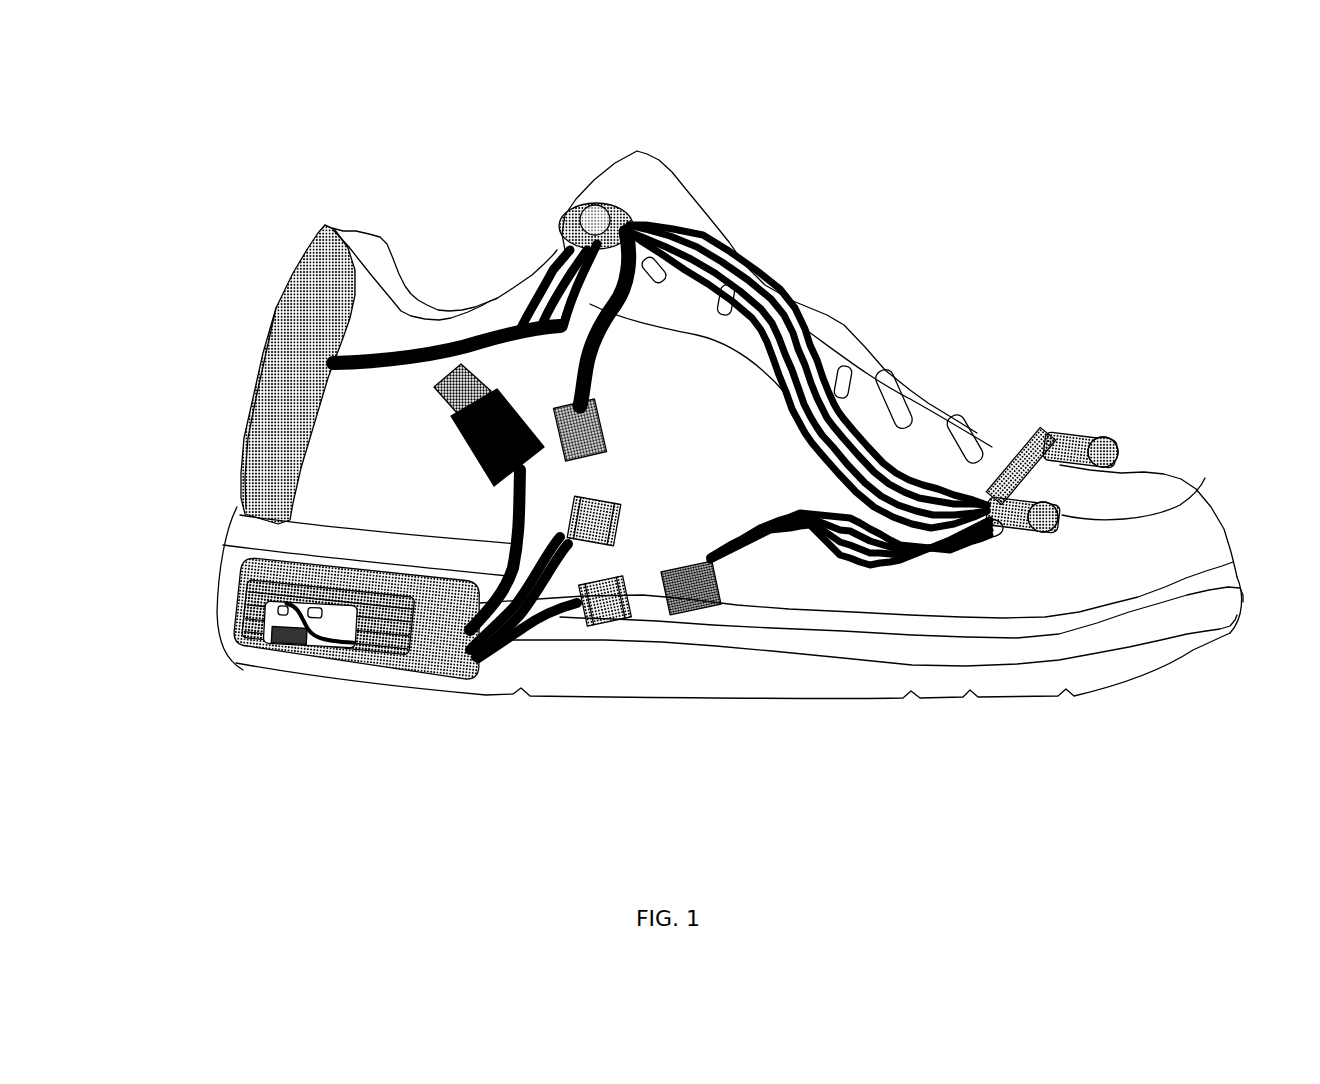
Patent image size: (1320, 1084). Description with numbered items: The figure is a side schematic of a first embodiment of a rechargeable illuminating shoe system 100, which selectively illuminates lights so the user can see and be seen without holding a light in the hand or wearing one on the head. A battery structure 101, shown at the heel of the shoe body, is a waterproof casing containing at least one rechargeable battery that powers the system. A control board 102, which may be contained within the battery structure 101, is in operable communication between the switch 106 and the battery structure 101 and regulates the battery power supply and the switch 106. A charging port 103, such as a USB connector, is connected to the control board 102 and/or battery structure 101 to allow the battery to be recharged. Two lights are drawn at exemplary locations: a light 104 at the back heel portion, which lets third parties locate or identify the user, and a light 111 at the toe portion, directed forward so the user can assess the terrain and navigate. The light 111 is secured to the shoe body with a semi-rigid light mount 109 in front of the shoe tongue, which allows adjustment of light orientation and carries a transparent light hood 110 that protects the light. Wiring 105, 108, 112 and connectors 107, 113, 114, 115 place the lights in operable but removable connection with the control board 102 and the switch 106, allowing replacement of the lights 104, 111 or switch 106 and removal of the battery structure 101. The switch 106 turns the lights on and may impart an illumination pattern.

The rechargeable illuminating shoe system 100 is at (275, 124).
The battery structure 101 is at (419, 682).
The control board 102 is at (292, 640).
The charging port 103 is at (442, 414).
The light 104 is at (262, 304).
The wiring 105 is at (399, 339).
The switch 106 is at (544, 205).
The connector 107 is at (592, 385).
The wiring 108 is at (775, 292).
The light mount 109 is at (1044, 424).
The light hood 110 is at (1112, 433).
The light 111 is at (1039, 525).
The wiring 112 is at (810, 547).
The connector 113 is at (682, 592).
The connector 114 is at (587, 612).
The connector 115 is at (559, 529).